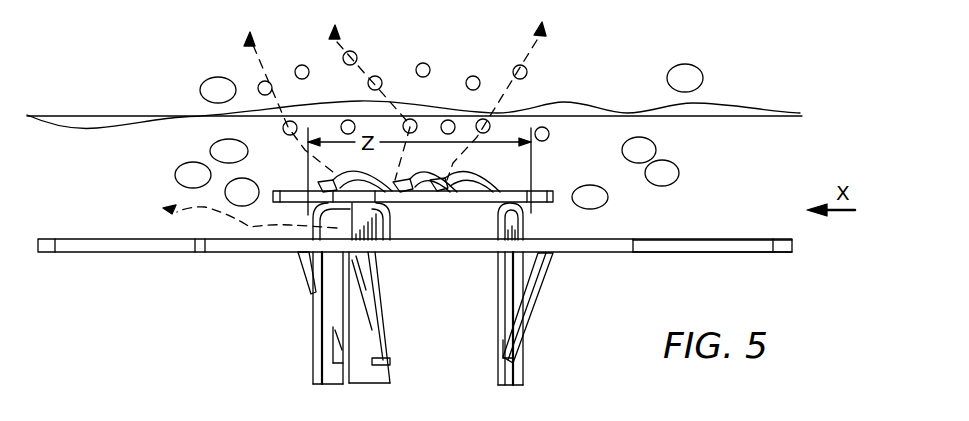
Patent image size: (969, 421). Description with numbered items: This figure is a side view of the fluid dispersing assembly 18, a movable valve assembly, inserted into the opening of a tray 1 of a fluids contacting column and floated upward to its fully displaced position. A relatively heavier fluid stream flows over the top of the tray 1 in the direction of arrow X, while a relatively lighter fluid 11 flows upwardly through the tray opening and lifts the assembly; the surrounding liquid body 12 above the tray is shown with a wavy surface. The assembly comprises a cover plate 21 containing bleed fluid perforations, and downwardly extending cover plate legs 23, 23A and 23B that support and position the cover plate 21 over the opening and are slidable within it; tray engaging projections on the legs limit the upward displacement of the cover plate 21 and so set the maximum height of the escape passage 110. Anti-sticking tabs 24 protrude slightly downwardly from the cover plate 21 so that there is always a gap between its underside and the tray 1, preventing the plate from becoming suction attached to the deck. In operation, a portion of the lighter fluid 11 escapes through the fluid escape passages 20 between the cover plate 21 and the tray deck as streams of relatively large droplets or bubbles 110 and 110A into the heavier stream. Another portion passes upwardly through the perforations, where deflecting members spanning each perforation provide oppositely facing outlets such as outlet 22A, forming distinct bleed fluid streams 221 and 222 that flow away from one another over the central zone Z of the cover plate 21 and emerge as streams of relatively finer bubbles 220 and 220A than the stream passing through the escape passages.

The tray 1 is at (753, 237).
The fluid 11 is at (441, 256).
The liquid 12 is at (745, 78).
The fluid dispersing assembly 18 is at (546, 290).
The fluid escape passage 20 is at (563, 222).
The cover plate 21 is at (553, 193).
The outlet 22A is at (456, 203).
The cover plate leg 23 is at (525, 368).
The cover plate leg 23A is at (313, 350).
The cover plate leg 23B is at (392, 373).
The anti-sticking tab 24 is at (510, 192).
The escape passage / stream of large bubbles 110 is at (190, 209).
The stream of large bubbles 110A is at (177, 170).
The stream of finer bubbles 220 is at (530, 45).
The stream of finer bubbles 220A is at (423, 63).
The bleed fluid stream 221 is at (333, 53).
The bleed fluid stream 222 is at (253, 62).